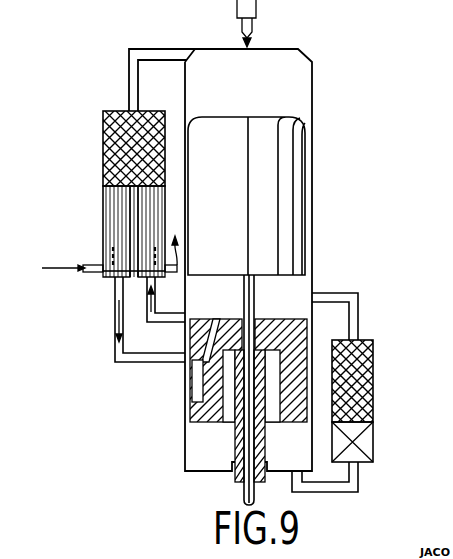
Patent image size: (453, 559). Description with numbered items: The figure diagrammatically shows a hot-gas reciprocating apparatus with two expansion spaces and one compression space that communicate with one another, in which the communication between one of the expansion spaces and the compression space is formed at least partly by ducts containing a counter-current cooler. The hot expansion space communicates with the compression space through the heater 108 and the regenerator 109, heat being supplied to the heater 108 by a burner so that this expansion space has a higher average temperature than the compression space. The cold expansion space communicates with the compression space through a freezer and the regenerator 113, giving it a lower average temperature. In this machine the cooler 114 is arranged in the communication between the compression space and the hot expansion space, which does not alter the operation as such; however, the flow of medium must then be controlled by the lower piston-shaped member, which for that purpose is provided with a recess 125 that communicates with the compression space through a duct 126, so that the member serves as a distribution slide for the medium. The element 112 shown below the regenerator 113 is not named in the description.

The heater 108 is at (137, 78).
The regenerator 109 is at (115, 148).
The cooler 114 is at (93, 227).
The duct 126 is at (209, 342).
The recess 125 is at (200, 388).
The regenerator 113 is at (360, 382).
The valve 112 is at (369, 440).